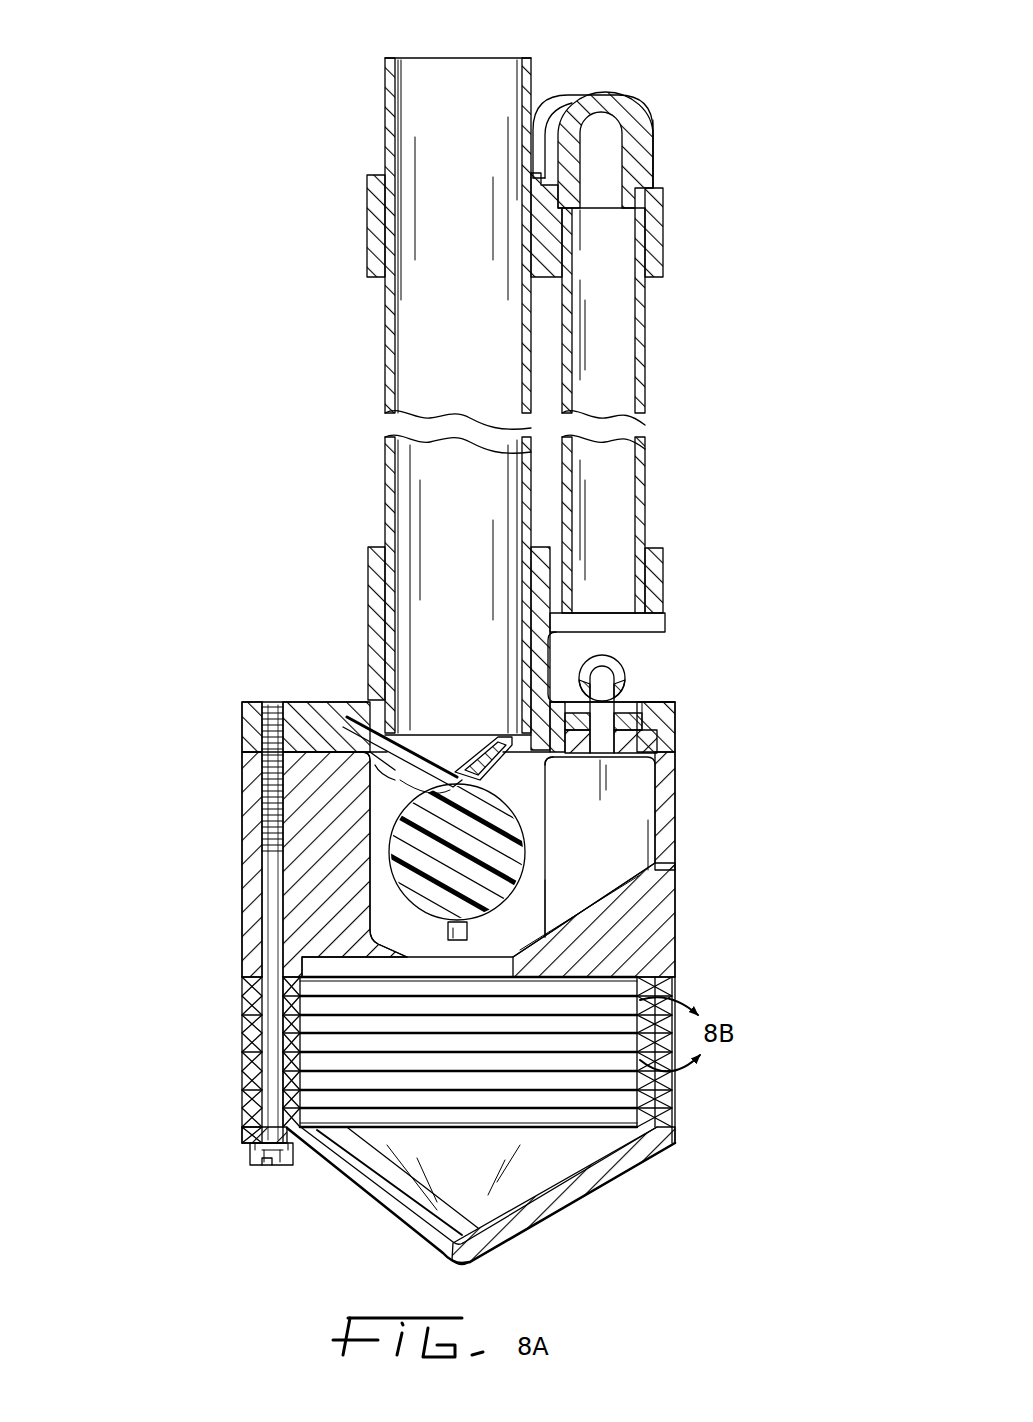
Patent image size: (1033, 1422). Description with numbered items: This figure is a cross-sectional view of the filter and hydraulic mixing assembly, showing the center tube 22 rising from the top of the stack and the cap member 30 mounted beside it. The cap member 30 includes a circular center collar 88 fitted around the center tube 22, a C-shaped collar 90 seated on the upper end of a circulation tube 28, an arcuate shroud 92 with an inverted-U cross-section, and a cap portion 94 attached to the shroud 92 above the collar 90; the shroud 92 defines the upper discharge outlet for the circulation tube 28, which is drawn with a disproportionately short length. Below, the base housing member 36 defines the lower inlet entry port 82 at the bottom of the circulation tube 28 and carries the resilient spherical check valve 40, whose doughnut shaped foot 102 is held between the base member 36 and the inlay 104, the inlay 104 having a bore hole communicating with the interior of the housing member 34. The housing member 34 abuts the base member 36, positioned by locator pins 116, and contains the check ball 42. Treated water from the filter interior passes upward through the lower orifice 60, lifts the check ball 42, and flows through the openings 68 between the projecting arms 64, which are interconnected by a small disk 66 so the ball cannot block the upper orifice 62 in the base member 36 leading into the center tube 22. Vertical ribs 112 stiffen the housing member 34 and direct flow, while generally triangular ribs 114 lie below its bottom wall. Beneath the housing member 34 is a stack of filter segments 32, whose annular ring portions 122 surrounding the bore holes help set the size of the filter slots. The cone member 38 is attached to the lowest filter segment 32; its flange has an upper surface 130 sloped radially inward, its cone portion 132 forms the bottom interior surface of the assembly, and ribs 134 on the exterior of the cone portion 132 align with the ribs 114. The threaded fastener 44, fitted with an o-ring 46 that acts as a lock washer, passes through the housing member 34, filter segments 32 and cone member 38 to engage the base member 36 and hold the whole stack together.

The center tube 22 is at (495, 80).
The circular center collar 88 is at (372, 220).
The base housing member 36 is at (372, 632).
The arcuate shroud 92 is at (553, 100).
The cap portion 94 is at (640, 100).
The cap member 30 is at (660, 150).
The C-shaped collar 90 is at (660, 247).
The circulation tube 28 is at (642, 385).
The lower inlet entry port 82 is at (625, 628).
The resilient spherical check valve 40 is at (630, 690).
The locator pin 116 is at (676, 742).
The doughnut shaped foot 102 is at (590, 750).
The inlay 104 is at (600, 752).
The upper orifice 62 is at (432, 752).
The opening 68 is at (458, 766).
The projecting arm 64 is at (525, 793).
The small disk 66 is at (528, 845).
The check ball 42 is at (548, 842).
The rib 112 is at (392, 865).
The lower orifice 60 is at (482, 935).
The housing member 34 is at (676, 858).
The triangular rib 114 is at (660, 940).
The filter segment 32 is at (240, 1003).
The annular ring portion 122 is at (240, 1062).
The o-ring 46 is at (257, 1152).
The threaded fastener 44 is at (255, 1168).
The upper surface 130 is at (350, 1130).
The cone member 38 is at (408, 1178).
The cone portion 132 is at (482, 1210).
The rib 134 is at (580, 1192).